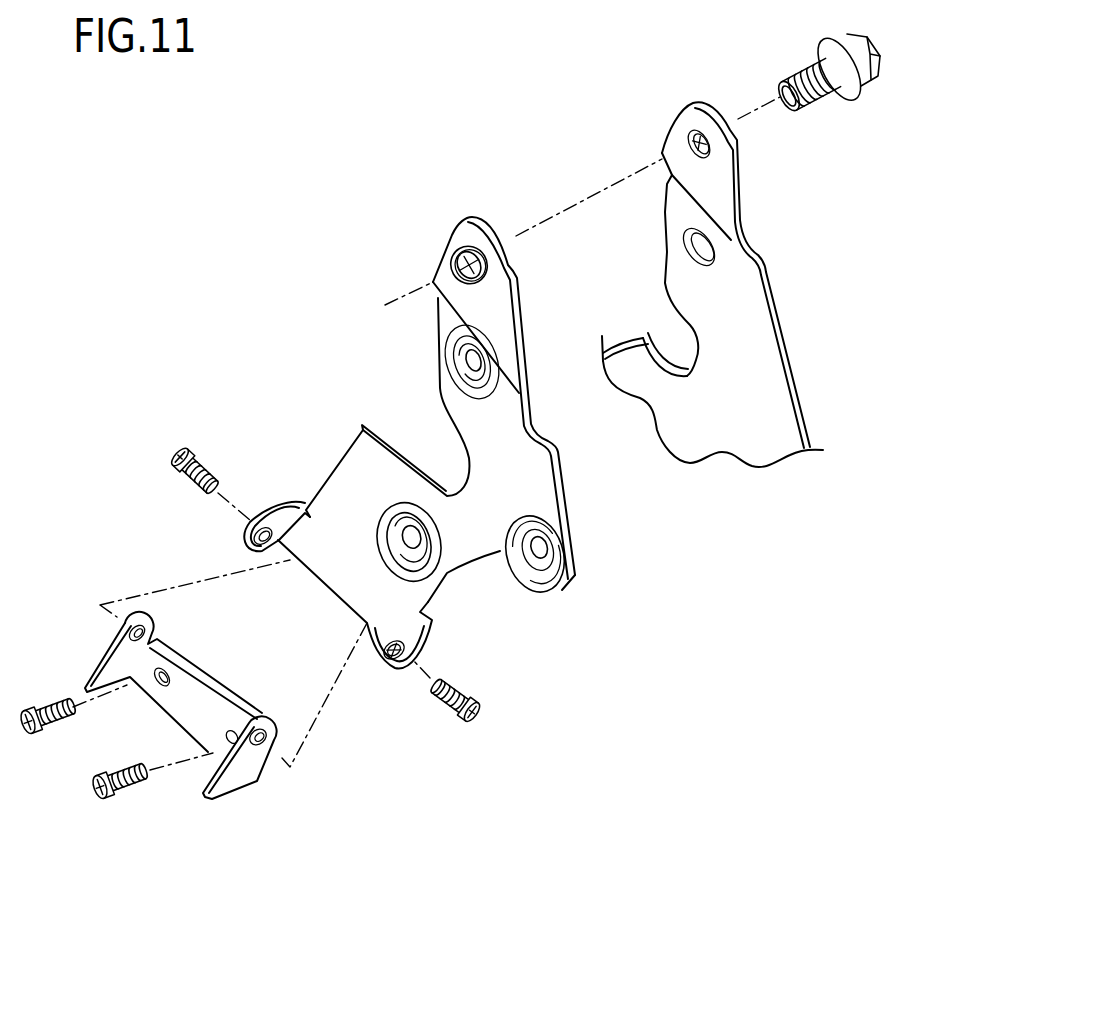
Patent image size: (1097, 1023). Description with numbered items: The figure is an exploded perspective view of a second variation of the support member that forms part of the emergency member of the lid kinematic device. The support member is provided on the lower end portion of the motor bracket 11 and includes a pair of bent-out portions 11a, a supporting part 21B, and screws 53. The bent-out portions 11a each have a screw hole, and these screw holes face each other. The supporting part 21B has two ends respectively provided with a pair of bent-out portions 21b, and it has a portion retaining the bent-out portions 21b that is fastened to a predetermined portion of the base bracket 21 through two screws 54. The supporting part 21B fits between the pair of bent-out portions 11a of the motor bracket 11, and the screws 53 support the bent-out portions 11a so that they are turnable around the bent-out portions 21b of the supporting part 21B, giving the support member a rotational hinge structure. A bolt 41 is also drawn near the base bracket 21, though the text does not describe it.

The motor bracket 11 is at (530, 493).
The bent-out portions 11a is at (274, 503).
The base bracket 21 is at (735, 312).
The supporting part 21B is at (93, 656).
The bent-out portions 21b is at (243, 778).
The bolt 41 is at (798, 66).
The screws 53 is at (205, 455).
The screws 54 is at (46, 705).